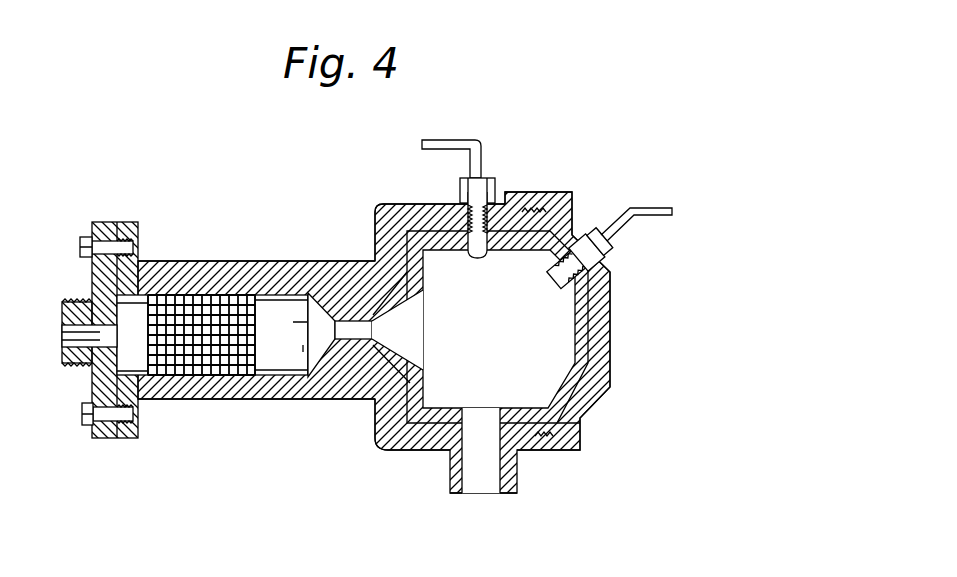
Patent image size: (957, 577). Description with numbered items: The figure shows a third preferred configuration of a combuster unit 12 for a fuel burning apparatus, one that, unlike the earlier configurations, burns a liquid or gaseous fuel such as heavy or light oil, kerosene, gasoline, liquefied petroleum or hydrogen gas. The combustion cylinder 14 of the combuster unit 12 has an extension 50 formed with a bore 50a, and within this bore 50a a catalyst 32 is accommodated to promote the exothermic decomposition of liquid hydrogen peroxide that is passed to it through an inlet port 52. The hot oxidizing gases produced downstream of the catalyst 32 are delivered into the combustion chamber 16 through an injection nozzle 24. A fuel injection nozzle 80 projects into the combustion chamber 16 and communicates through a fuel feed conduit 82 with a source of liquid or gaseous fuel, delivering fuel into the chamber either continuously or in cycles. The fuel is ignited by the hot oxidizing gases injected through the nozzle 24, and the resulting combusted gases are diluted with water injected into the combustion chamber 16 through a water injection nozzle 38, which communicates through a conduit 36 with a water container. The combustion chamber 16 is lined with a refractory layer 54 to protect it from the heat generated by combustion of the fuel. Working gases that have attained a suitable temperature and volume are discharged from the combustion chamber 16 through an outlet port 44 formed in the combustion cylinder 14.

The combuster unit 12 is at (334, 218).
The combustion cylinder 14 is at (382, 202).
The combustion chamber 16 is at (505, 343).
The injection nozzle 24 is at (356, 336).
The catalyst 32 is at (210, 350).
The conduit 36 is at (480, 215).
The water injection nozzle 38 is at (480, 258).
The outlet port 44 is at (466, 455).
The extension 50 is at (283, 262).
The bore 50a is at (288, 372).
The inlet port 52 is at (62, 330).
The refractory layer 54 is at (430, 377).
The fuel injection nozzle 80 is at (557, 284).
The fuel feed conduit 82 is at (643, 213).